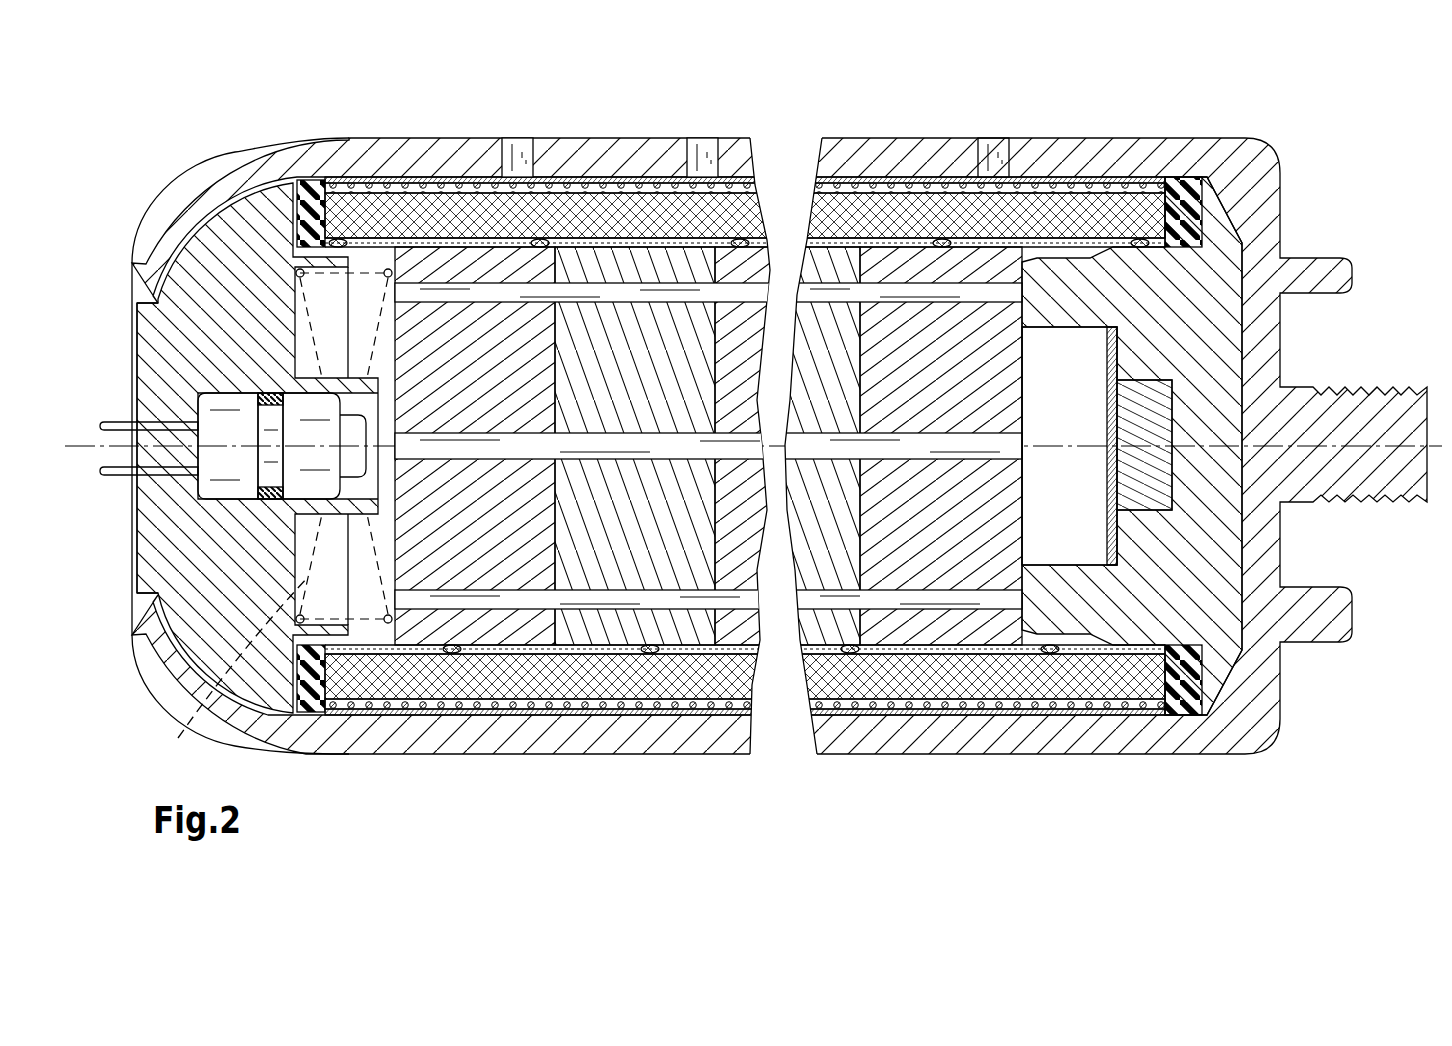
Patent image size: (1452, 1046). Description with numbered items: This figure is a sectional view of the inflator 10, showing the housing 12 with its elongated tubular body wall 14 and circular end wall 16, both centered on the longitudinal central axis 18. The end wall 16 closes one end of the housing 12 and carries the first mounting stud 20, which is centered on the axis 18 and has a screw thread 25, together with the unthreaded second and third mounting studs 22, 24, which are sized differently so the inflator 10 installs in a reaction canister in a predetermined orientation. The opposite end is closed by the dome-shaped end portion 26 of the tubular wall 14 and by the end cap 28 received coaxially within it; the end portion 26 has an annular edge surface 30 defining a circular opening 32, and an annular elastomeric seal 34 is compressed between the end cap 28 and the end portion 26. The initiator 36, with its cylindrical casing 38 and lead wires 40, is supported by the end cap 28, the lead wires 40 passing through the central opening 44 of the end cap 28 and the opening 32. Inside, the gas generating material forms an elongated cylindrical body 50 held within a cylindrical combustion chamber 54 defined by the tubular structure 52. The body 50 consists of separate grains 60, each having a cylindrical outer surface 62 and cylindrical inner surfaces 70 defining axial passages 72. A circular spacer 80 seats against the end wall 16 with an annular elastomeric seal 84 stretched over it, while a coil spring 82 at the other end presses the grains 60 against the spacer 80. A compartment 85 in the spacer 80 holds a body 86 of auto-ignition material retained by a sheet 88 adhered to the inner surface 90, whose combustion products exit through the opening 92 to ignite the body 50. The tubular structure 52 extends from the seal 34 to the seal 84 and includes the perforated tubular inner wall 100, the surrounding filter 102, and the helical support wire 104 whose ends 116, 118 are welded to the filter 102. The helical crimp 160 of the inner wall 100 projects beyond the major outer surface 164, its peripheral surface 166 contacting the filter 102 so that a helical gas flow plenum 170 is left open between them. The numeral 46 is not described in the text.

The inflator 10 is at (207, 102).
The housing 12 is at (336, 140).
The tubular body wall 14 is at (728, 150).
The end wall 16 is at (1263, 341).
The longitudinal central axis 18 is at (77, 450).
The first mounting stud 20 is at (1415, 400).
The second mounting stud 22 is at (1335, 260).
The third mounting stud 24 is at (1338, 618).
The screw thread 25 is at (1412, 505).
The end portion of the tubular wall 26 is at (182, 220).
The end cap 28 is at (155, 293).
The annular edge surface 30 is at (132, 622).
The circular opening 32 is at (128, 568).
The annular elastomeric seal 34 is at (317, 183).
The initiator 36 is at (240, 390).
The casing 38 is at (217, 481).
The lead wires 40 is at (118, 420).
The central opening 44 is at (128, 461).
The housing slot 46 is at (515, 138).
The elongated cylindrical body of gas generating material 50 is at (440, 255).
The tubular structure 52 is at (505, 237).
The combustion chamber 54 is at (628, 387).
The grains 60 is at (437, 632).
The cylindrical outer surface 62 is at (480, 655).
The cylindrical inner surfaces 70 is at (530, 303).
The cylindrical passage 72 is at (487, 290).
The spacer 80 is at (1055, 258).
The coil spring 82 is at (270, 511).
The annular elastomeric seal 84 is at (1182, 178).
The compartment 85 is at (1118, 466).
The body of auto-ignition material 86 is at (1130, 495).
The sheet 88 is at (1112, 335).
The inner surface 90 is at (1112, 360).
The opening 92 is at (1024, 402).
The tubular inner wall 100 is at (600, 245).
The filter 102 is at (640, 215).
The support wire 104 is at (655, 190).
The end of support wire 116 is at (333, 188).
The end of support wire 118 is at (1142, 185).
The crimp 160 is at (900, 205).
The major outer surface 164 is at (838, 242).
The peripheral surface 166 is at (945, 240).
The gas flow plenum 170 is at (548, 240).